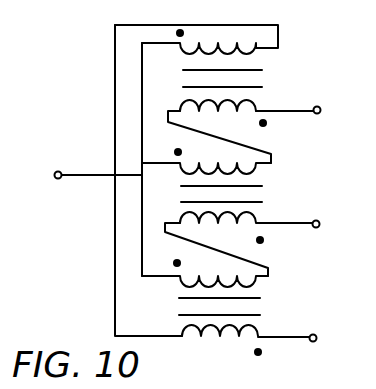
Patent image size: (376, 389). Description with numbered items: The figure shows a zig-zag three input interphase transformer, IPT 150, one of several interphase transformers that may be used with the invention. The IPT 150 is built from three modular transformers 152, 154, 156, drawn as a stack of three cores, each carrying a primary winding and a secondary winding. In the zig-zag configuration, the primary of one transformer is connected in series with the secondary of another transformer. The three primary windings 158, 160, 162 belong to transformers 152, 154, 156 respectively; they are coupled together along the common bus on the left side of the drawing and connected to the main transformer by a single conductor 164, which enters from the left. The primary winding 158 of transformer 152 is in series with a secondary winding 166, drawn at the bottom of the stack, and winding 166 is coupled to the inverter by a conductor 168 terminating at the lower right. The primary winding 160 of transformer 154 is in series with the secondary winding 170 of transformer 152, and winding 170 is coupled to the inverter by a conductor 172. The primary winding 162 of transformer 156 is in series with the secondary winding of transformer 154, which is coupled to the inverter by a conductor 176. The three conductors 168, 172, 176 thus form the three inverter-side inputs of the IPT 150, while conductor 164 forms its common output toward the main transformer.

The zig-zag three input IPT 150 is at (314, 41).
The modular transformer 152 is at (258, 78).
The modular transformer 154 is at (261, 193).
The modular transformer 156 is at (263, 308).
The primary winding 158 is at (258, 55).
The primary winding 160 is at (258, 171).
The primary winding 162 is at (268, 277).
The conductor 164 is at (86, 171).
The secondary winding 166 is at (217, 339).
The conductor 168 is at (298, 338).
The secondary winding 170 is at (184, 101).
The conductor 172 is at (290, 111).
The conductor 176 is at (285, 224).